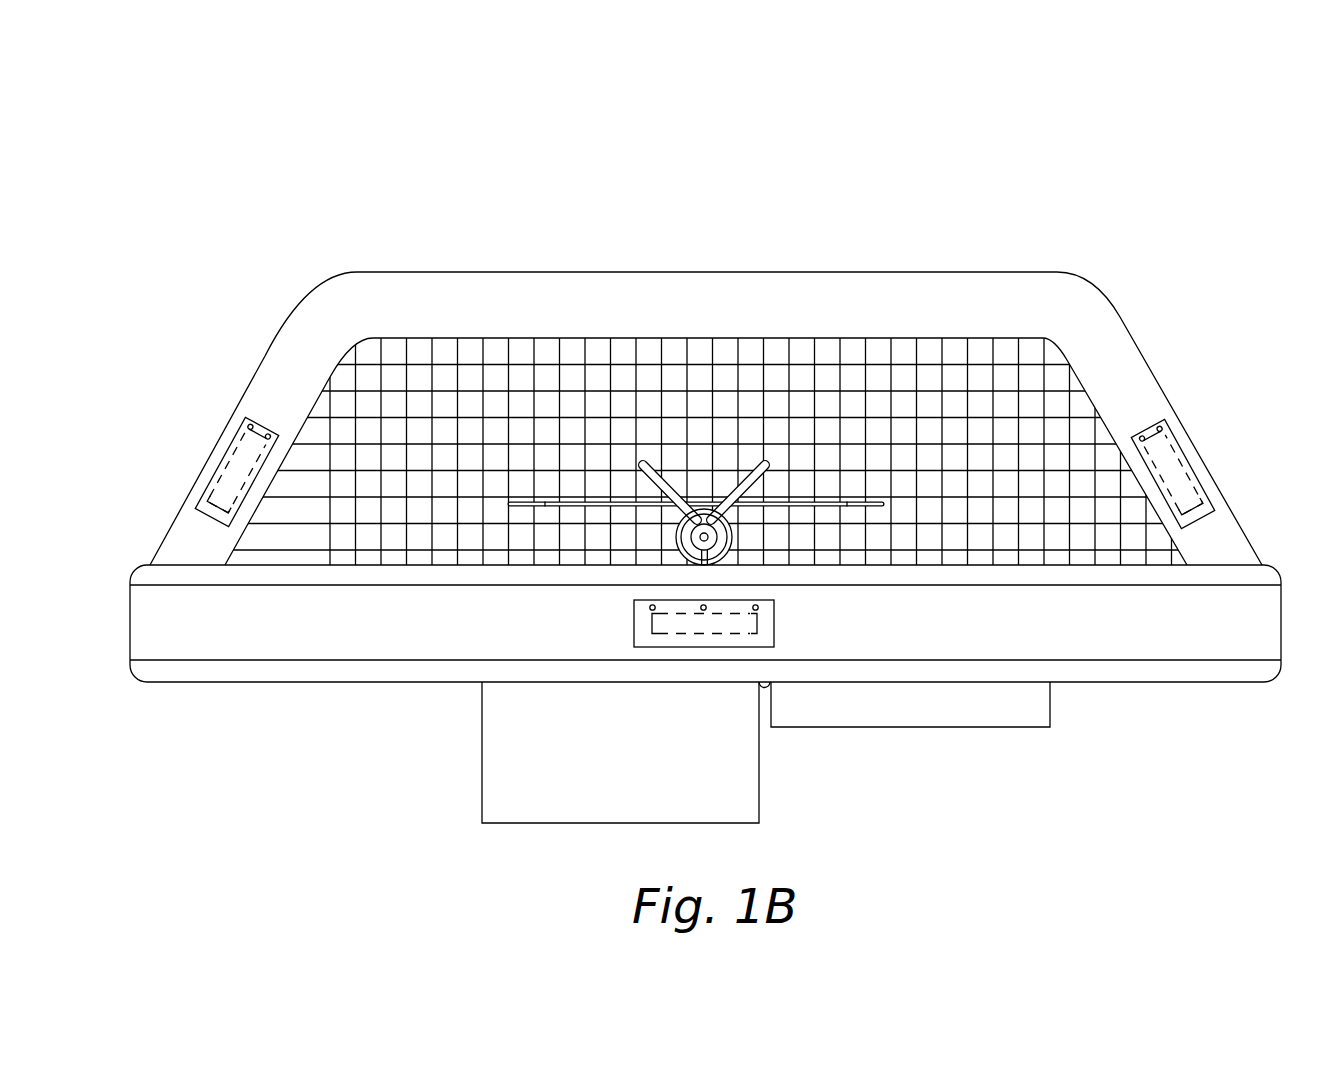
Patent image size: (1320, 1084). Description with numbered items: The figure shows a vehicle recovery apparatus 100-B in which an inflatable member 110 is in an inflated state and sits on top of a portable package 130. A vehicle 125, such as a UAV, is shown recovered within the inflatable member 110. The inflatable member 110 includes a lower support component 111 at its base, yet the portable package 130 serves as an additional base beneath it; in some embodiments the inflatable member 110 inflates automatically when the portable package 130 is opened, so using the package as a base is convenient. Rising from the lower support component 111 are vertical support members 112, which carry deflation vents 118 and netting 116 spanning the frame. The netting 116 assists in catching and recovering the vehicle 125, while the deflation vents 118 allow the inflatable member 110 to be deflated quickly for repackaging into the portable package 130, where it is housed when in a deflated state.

The apparatus 100-B is at (271, 132).
The inflatable member 110 is at (233, 334).
The lower support component 111 is at (1186, 682).
The vertical support members 112 is at (920, 272).
The netting 116 is at (547, 363).
The deflation vents 118 is at (1190, 464).
The vehicle 125 is at (699, 465).
The portable package 130 is at (805, 793).